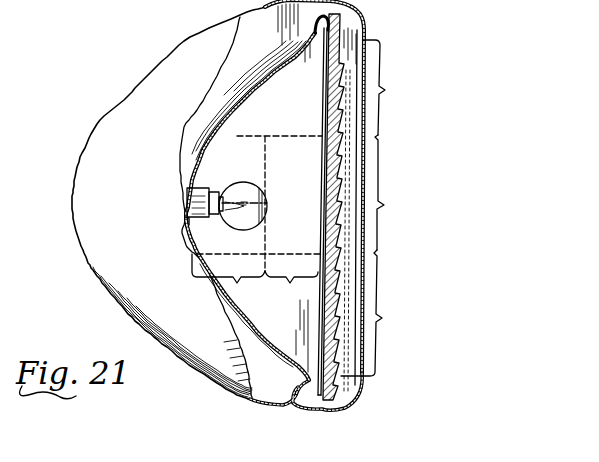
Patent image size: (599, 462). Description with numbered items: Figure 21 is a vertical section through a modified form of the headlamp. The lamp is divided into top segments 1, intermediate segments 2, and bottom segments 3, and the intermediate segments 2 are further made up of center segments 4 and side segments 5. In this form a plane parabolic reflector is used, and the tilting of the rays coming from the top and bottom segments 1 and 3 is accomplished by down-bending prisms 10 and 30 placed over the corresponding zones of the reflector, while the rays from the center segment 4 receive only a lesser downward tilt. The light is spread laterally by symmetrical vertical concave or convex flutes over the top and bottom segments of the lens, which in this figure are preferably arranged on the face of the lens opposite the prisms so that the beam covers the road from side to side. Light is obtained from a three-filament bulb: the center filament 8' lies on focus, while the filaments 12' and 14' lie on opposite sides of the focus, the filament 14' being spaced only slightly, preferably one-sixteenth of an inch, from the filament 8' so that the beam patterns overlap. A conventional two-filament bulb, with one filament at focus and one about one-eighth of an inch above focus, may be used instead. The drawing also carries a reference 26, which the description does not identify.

The top segments 1 is at (381, 87).
The intermediate segments 2 is at (385, 192).
The bottom segments 3 is at (368, 313).
The center segments 4 is at (228, 280).
The side segments 5 is at (291, 287).
The center filament 8' is at (254, 202).
The down-bending prisms 10 is at (340, 128).
The filament 12' is at (225, 191).
The filament 14' is at (214, 234).
The serrated lens holder bar 26 is at (338, 230).
The down-bending prisms 30 is at (337, 340).